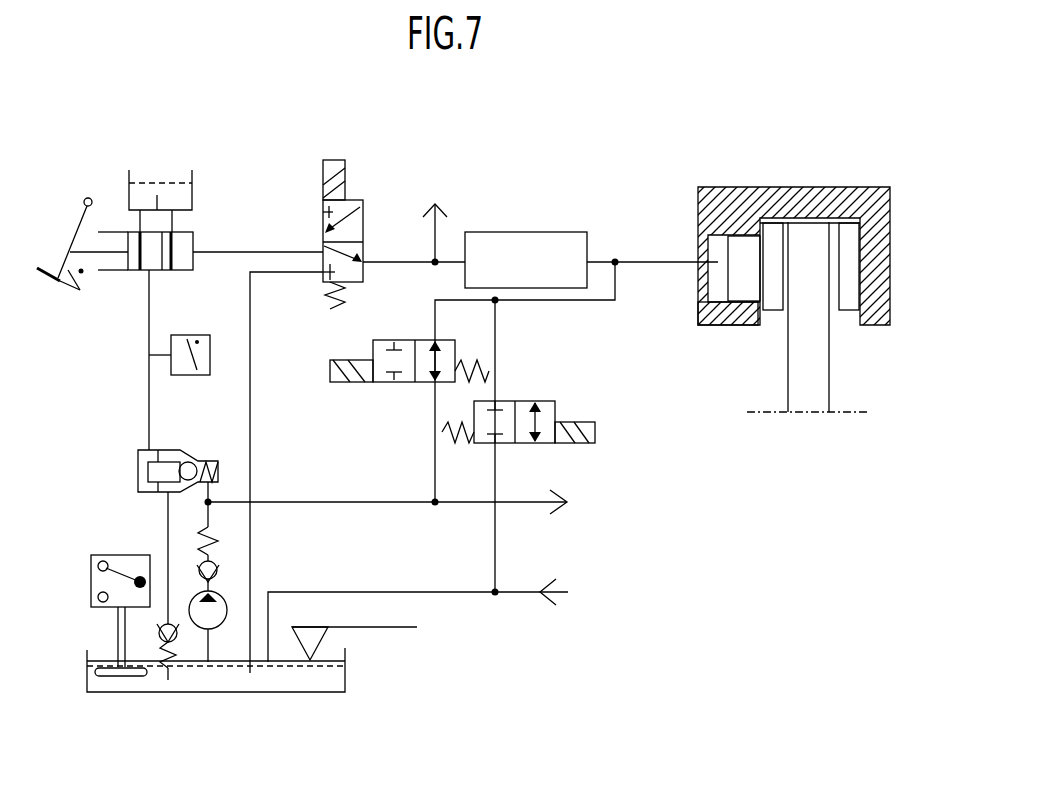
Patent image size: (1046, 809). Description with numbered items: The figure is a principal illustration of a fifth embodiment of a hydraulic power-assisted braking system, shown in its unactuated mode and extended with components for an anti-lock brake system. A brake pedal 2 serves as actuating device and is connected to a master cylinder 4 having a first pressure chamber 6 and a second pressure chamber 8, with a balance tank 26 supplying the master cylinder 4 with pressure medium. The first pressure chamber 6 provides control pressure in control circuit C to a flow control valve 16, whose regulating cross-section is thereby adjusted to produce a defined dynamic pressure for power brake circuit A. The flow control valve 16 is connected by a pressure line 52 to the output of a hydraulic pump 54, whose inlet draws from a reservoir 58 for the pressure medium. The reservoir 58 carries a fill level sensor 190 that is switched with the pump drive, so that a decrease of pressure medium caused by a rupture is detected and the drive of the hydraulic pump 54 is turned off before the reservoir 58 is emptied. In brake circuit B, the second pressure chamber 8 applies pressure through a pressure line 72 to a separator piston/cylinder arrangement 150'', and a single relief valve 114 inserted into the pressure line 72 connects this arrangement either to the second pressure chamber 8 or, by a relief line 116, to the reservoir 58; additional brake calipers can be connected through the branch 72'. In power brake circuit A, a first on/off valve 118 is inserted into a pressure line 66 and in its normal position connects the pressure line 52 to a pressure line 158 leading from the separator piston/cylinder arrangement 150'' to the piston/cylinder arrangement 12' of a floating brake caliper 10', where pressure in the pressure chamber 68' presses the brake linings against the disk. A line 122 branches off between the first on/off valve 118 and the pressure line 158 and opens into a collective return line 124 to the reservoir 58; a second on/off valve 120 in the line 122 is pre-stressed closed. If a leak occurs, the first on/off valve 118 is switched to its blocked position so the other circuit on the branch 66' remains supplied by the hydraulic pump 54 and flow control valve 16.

The brake pedal 2 is at (75, 227).
The master cylinder 4 is at (124, 226).
The first pressure chamber 6 is at (150, 262).
The second pressure chamber 8 is at (182, 265).
The balance tank 26 is at (177, 200).
The brake circuit B is at (259, 238).
The relief valve 114 is at (363, 188).
The relief line 116 is at (252, 402).
The pressure line 72 is at (414, 292).
The branch 72' is at (462, 223).
The separator piston/cylinder arrangement 150'' is at (526, 260).
The pressure line 158 is at (652, 258).
The line 122 is at (497, 335).
The brake caliper 10' is at (794, 267).
The pressure chamber 68' is at (702, 286).
The piston/cylinder arrangement 12' is at (728, 344).
The first on/off valve 118 is at (410, 390).
The second on/off valve 120 is at (552, 452).
The power brake circuit A is at (322, 490).
The control circuit C is at (138, 386).
The flow control valve 16 is at (126, 483).
The pressure line 66 is at (386, 527).
The branch 66' is at (547, 522).
The pressure line 52 is at (213, 520).
The hydraulic pump 54 is at (220, 610).
The fill level sensor 190 is at (82, 563).
The collective return line 124 is at (460, 595).
The reservoir 58 is at (332, 677).